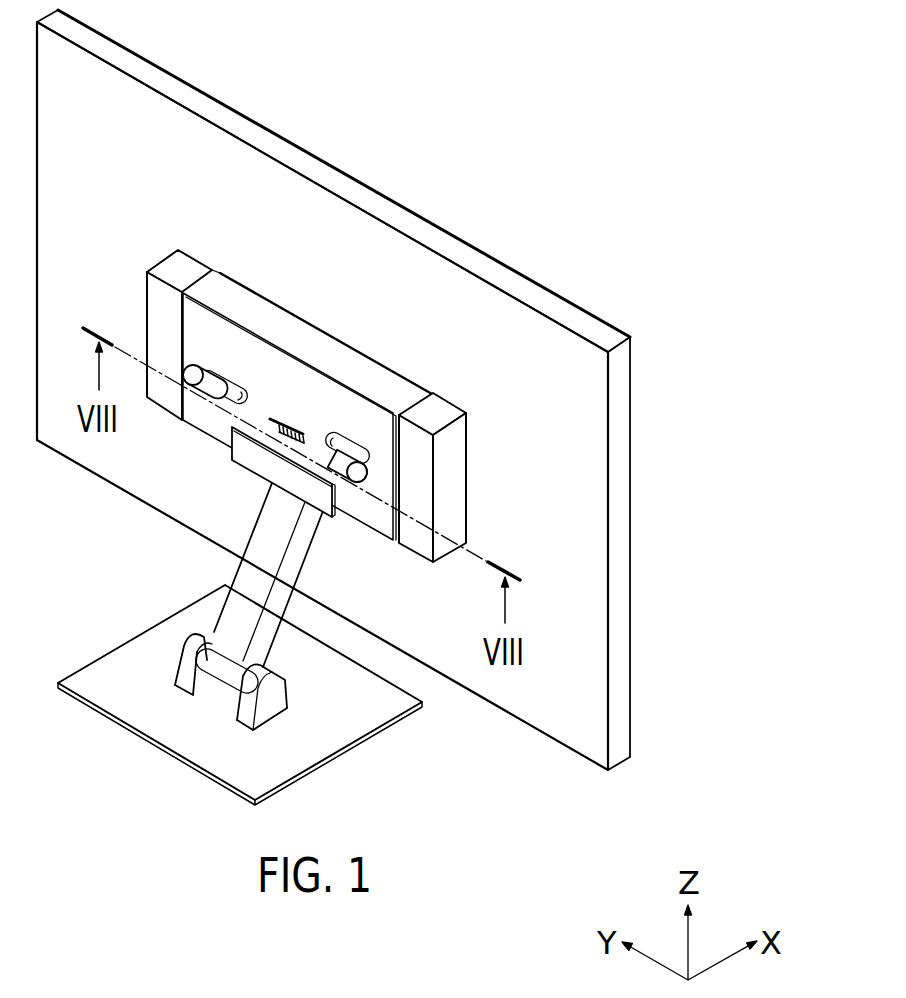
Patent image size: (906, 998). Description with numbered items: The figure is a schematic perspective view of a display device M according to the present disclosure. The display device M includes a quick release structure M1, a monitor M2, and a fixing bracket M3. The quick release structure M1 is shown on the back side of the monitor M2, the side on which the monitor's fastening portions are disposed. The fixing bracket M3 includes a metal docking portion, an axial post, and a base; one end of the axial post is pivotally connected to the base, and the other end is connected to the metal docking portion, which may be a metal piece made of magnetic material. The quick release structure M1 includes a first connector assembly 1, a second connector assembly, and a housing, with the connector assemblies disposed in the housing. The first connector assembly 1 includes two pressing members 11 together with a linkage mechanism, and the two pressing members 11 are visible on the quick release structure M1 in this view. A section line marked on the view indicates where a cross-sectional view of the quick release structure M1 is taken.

The display device M is at (383, 407).
The quick release structure M1 is at (206, 425).
The monitor M2 is at (630, 556).
The fixing bracket M3 is at (224, 615).
The first connector assembly 1 is at (306, 394).
The pressing members 11 is at (445, 336).